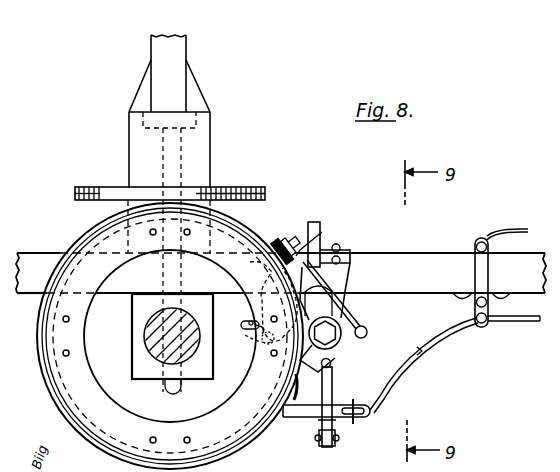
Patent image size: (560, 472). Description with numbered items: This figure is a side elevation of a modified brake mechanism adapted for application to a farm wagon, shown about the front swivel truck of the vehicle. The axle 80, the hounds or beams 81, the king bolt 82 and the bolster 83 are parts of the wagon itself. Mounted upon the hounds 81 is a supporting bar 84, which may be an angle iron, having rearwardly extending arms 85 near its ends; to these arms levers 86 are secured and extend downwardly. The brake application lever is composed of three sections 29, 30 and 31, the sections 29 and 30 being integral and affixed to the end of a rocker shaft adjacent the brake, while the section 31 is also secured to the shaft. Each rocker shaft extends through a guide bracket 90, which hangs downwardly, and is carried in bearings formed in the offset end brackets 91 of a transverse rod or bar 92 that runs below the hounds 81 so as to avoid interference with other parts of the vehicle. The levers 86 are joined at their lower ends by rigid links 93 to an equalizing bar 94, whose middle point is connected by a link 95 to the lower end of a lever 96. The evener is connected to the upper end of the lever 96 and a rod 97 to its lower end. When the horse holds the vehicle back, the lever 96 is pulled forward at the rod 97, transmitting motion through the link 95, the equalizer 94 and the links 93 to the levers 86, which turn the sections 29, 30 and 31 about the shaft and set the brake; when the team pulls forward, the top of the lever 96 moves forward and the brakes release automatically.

The brake application lever section 29 is at (367, 332).
The brake application lever section 30 is at (331, 363).
The brake application lever section 31 is at (333, 382).
The axle 80 is at (197, 342).
The hounds or beams 81 is at (33, 291).
The king bolt 82 is at (160, 138).
The bolster 83 is at (200, 152).
The supporting bar 84 is at (322, 229).
The rearwardly extending arm 85 is at (299, 216).
The lever 86 is at (276, 376).
The guide bracket 90 is at (355, 304).
The offset end bracket 91 is at (320, 424).
The transverse rod or bar 92 is at (329, 447).
The rigid link 93 is at (305, 410).
The equalizing bar 94 is at (356, 421).
The link 95 is at (424, 365).
The lever 96 is at (475, 276).
The rod 97 is at (510, 323).